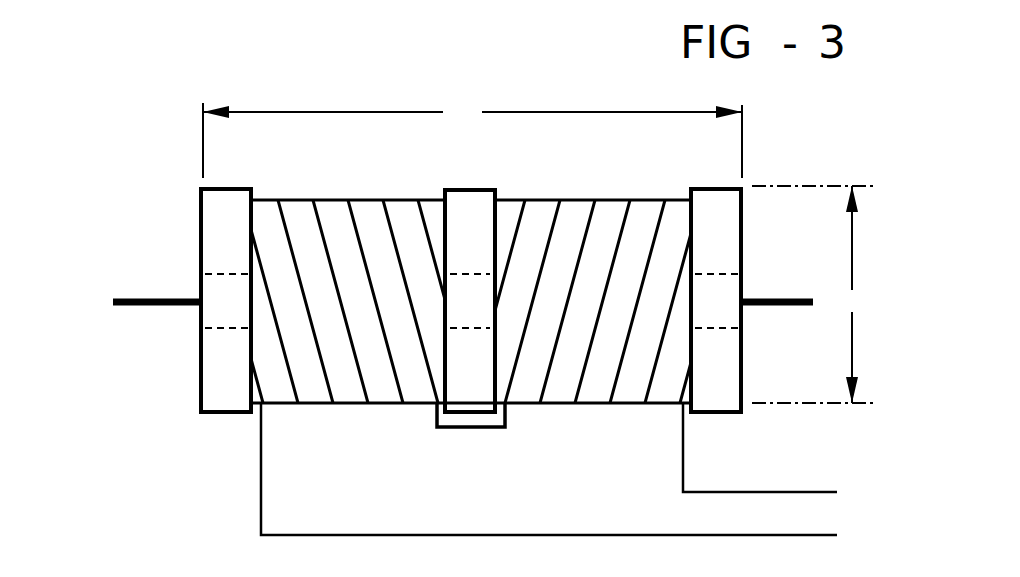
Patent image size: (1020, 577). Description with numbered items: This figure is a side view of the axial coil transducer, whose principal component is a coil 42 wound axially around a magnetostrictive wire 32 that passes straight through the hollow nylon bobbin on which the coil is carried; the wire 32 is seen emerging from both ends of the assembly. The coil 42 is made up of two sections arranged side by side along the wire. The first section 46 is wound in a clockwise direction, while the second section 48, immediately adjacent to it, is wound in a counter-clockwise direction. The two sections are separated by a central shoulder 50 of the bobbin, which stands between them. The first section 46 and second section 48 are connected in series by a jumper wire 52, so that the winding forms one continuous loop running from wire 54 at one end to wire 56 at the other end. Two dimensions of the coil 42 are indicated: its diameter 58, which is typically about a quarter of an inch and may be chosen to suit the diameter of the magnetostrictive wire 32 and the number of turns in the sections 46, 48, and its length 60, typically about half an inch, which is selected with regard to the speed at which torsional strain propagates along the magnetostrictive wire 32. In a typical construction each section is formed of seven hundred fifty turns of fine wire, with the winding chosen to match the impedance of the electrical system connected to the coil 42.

The magnetostrictive wire 32 is at (165, 297).
The coil 42 is at (150, 200).
The first section 46 is at (352, 407).
The second section 48 is at (593, 405).
The central shoulder 50 is at (465, 210).
The jumper wire 52 is at (475, 428).
The wire 54 is at (808, 492).
The wire 56 is at (808, 535).
The diameter 58 is at (812, 294).
The length 60 is at (472, 138).